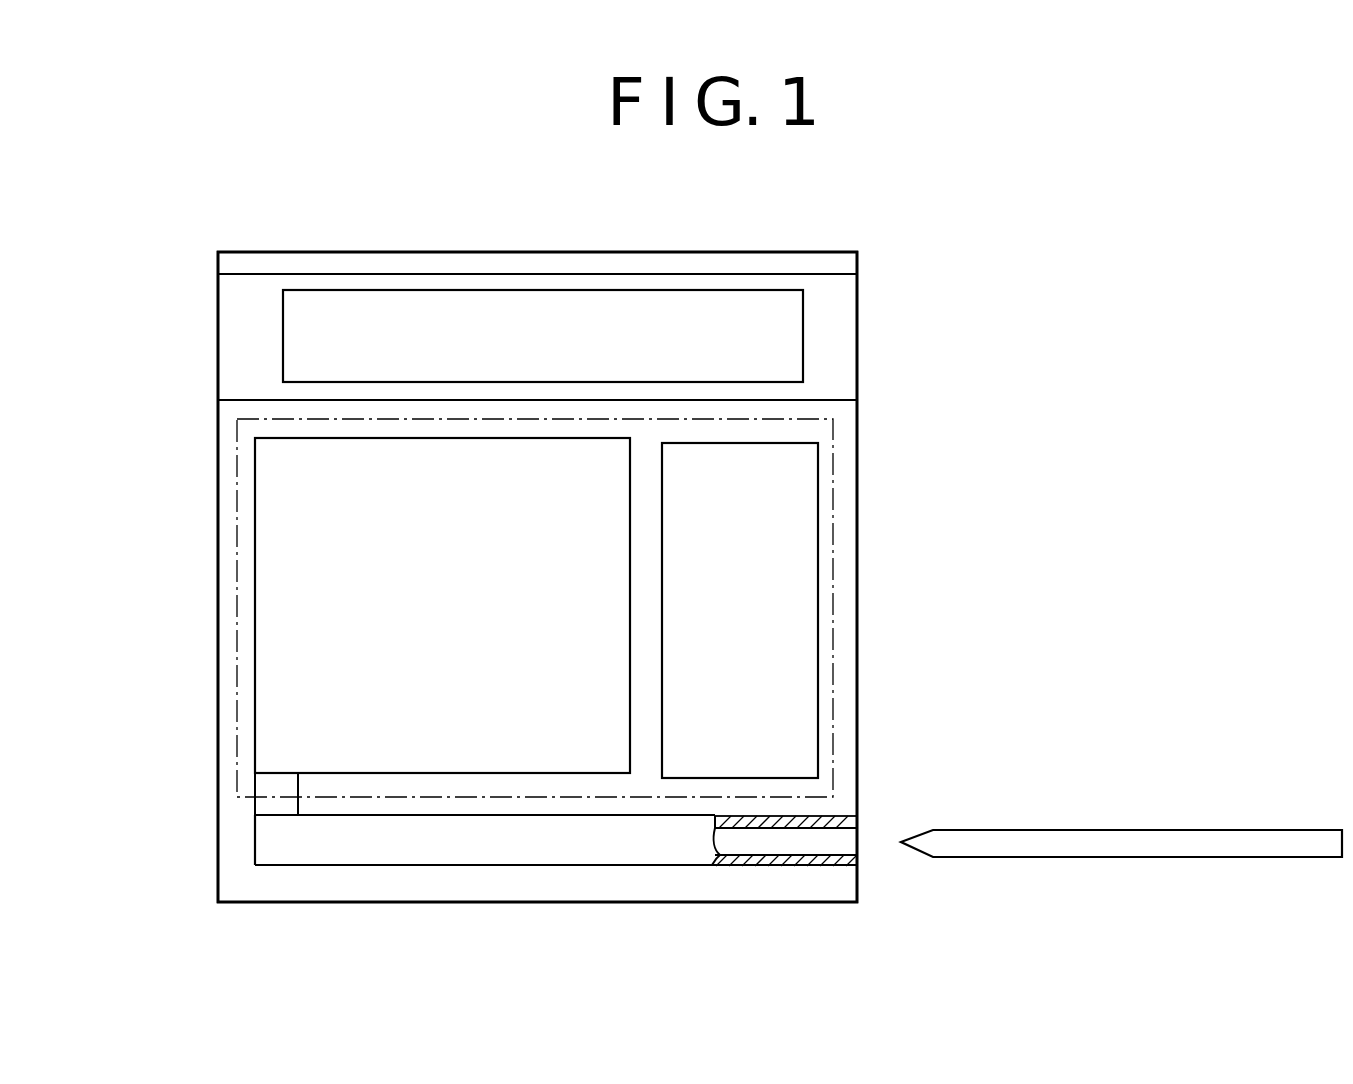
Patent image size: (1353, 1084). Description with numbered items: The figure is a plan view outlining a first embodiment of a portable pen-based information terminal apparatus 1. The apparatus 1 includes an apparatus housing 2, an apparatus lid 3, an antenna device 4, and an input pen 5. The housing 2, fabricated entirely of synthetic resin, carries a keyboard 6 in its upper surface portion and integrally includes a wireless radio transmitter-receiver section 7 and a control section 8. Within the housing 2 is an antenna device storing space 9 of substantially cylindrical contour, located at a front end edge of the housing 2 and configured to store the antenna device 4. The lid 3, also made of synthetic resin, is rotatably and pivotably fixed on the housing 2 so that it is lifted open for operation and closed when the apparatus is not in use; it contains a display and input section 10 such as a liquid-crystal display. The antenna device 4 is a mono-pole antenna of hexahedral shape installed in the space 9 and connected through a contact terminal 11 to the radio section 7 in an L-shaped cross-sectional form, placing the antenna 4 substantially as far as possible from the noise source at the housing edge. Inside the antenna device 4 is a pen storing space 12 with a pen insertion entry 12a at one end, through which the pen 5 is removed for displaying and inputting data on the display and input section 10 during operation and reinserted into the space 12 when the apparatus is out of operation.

The portable pen-based information terminal apparatus 1 is at (932, 337).
The apparatus housing 2 is at (228, 873).
The apparatus lid 3 is at (246, 298).
The antenna device 4 is at (525, 846).
The input pen 5 is at (1132, 842).
The keyboard 6 is at (833, 480).
The radio section 7 is at (275, 600).
The control section 8 is at (802, 585).
The antenna device storing space 9 is at (794, 843).
The display and input section 10 is at (640, 312).
The contact terminal 11 is at (283, 784).
The pen storing space 12 is at (858, 812).
The pen insertion entry 12a is at (858, 843).